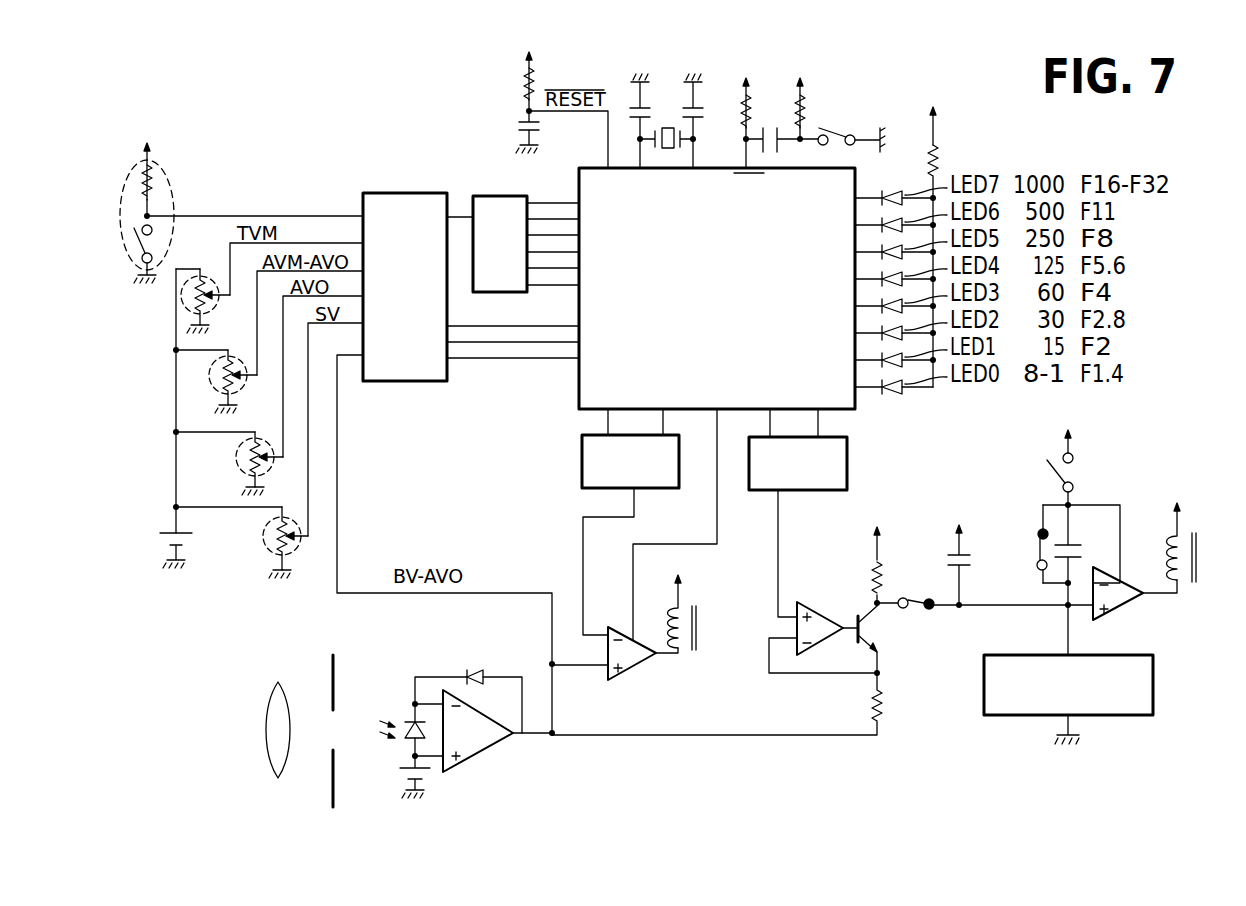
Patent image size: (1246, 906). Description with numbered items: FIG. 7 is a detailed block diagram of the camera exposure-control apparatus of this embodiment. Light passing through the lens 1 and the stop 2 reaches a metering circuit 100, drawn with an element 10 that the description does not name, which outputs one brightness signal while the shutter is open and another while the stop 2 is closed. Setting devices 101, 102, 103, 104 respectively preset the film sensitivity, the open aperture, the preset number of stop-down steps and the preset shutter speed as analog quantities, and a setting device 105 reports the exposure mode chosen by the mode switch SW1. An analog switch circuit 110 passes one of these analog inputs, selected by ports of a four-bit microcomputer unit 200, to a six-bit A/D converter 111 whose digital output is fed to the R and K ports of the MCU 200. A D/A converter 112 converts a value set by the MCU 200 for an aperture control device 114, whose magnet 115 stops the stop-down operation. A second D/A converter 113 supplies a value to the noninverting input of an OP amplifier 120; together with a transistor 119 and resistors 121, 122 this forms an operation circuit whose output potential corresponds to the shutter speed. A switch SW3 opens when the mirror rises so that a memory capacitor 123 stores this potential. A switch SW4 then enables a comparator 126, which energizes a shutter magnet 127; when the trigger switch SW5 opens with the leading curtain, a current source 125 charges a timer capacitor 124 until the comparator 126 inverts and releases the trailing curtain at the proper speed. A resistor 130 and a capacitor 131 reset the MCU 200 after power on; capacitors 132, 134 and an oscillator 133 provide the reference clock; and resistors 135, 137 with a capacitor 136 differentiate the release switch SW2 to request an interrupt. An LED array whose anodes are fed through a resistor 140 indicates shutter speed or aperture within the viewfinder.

The lens 1 is at (266, 759).
The stop 2 is at (336, 790).
The photodiode 10 is at (406, 742).
The metering circuit 100 is at (490, 748).
The setting device 101 is at (263, 546).
The setting device 102 is at (238, 456).
The setting device 103 is at (208, 376).
The setting device 104 is at (180, 310).
The setting device 105 is at (160, 184).
The analog switch circuit 110 is at (400, 193).
The 6-bit A/D converter 111 is at (490, 196).
The 6-bit D/A converter 112 is at (582, 462).
The 6-bit D/A converter 113 is at (847, 462).
The aperture control device 114 is at (635, 676).
The magnet 115 is at (700, 620).
The transistor 119 is at (878, 630).
The OP amplifier 120 is at (830, 622).
The resistor 121 is at (884, 702).
The resistor 122 is at (870, 566).
The memory capacitor 123 is at (972, 560).
The timer capacitor 124 is at (1083, 548).
The current source 125 is at (1153, 683).
The comparator 126 is at (1126, 612).
The shutter magnet 127 is at (1190, 586).
The resistor 130 is at (522, 94).
The capacitor 131 is at (518, 127).
The capacitor 132 is at (636, 100).
The oscillator 133 is at (666, 128).
The capacitor 134 is at (700, 107).
The resistor 135 is at (750, 100).
The capacitor 136 is at (762, 144).
The resistor 137 is at (805, 100).
The resistor 140 is at (940, 160).
The microcomputer unit 200 is at (579, 388).
The mode switch SW1 is at (127, 245).
The release switch SW2 is at (840, 130).
The switch SW3 is at (918, 598).
The switch SW4 is at (1072, 464).
The trigger switch SW5 is at (1036, 540).